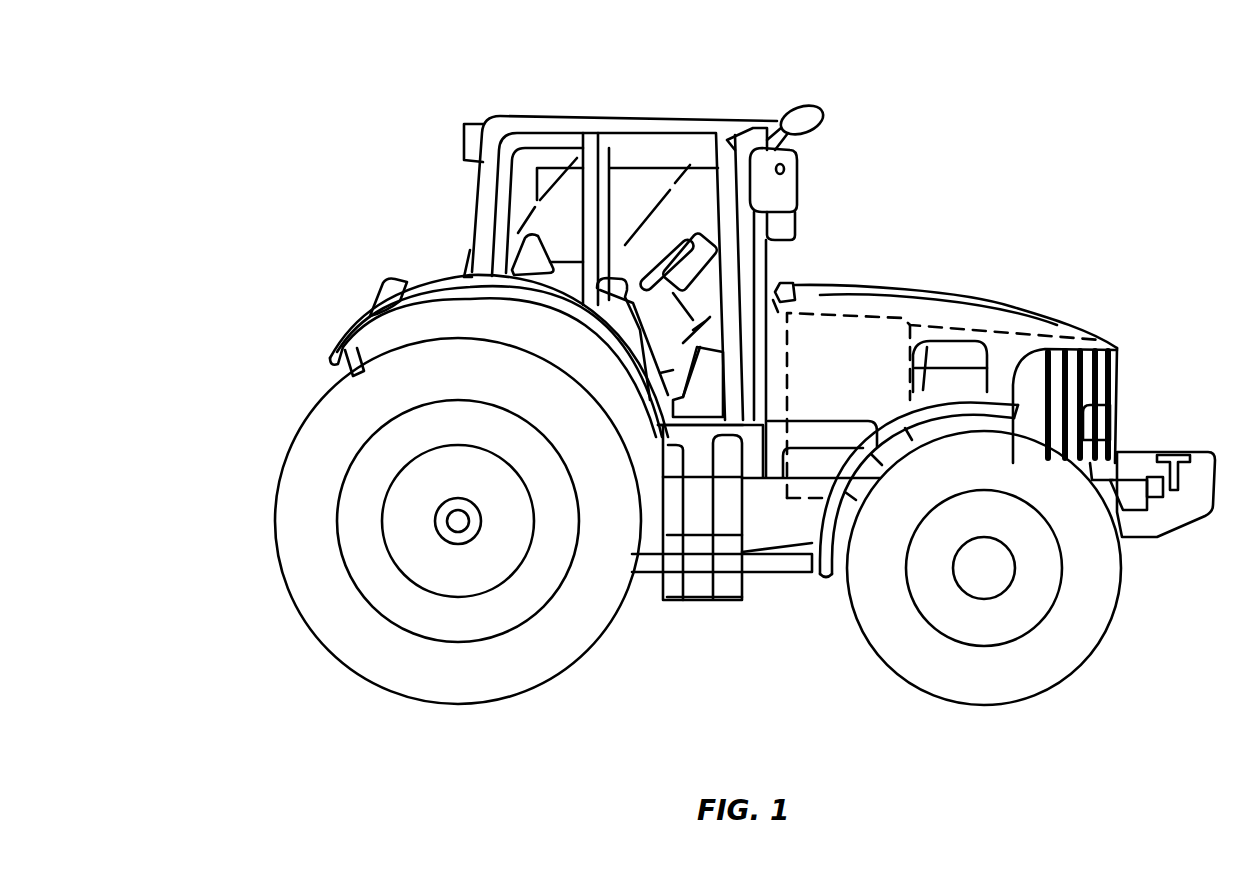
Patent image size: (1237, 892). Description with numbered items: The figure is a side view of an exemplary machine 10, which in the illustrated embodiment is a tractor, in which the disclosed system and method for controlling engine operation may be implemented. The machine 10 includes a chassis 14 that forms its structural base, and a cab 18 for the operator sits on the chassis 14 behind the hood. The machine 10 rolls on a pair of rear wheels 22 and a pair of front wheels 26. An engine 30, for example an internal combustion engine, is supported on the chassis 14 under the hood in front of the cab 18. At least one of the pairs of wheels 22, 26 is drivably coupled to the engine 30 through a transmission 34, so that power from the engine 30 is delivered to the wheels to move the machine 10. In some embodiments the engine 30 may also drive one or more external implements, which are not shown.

The machine 10 is at (978, 103).
The chassis 14 is at (797, 577).
The cab 18 is at (662, 117).
The pair of rear wheels 22 is at (297, 613).
The pair of front wheels 26 is at (1122, 598).
The engine 30 is at (1000, 310).
The transmission 34 is at (873, 310).